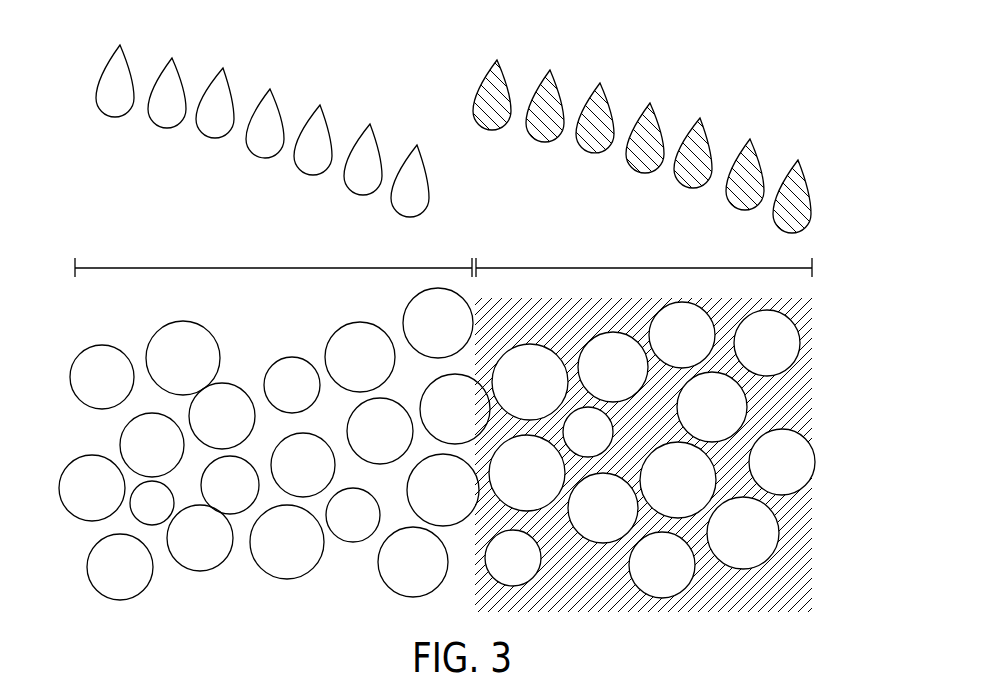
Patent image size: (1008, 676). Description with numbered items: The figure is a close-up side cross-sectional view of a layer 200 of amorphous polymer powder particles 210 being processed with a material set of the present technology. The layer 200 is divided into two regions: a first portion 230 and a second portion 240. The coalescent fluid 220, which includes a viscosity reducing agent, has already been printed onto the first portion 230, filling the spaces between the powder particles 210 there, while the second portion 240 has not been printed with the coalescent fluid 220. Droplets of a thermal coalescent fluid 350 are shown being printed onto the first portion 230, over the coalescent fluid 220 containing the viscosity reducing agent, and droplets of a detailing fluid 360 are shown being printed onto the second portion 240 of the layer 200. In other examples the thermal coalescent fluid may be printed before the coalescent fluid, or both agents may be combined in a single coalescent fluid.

The layer 200 is at (110, 208).
The amorphous polymer powder particles 210 is at (758, 533).
The coalescent fluid 220 is at (813, 372).
The first portion 230 is at (557, 268).
The second portion 240 is at (270, 268).
The thermal coalescent fluid 350 is at (807, 182).
The detailing fluid 360 is at (277, 112).